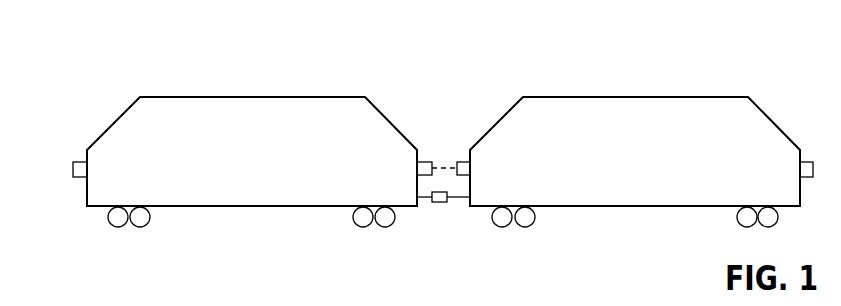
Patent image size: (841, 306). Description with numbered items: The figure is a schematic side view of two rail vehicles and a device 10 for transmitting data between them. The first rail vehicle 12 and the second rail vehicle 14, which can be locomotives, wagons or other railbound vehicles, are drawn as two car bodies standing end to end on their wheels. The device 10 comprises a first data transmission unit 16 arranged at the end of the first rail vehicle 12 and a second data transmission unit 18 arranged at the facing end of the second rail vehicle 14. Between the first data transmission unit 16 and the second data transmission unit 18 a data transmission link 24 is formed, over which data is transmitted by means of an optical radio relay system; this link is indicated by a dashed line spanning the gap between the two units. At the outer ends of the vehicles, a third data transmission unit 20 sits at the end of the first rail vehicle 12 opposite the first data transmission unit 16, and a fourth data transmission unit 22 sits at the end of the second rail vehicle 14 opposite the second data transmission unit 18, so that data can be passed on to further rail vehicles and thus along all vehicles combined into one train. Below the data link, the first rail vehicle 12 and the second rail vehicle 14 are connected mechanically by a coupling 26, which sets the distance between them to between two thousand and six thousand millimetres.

The device for transmitting data 10 is at (420, 87).
The first rail vehicle 12 is at (257, 167).
The second rail vehicle 14 is at (657, 167).
The first data transmission unit 16 is at (423, 161).
The second data transmission unit 18 is at (463, 161).
The third data transmission unit 20 is at (80, 161).
The fourth data transmission unit 22 is at (807, 161).
The data transmission link 24 is at (443, 165).
The coupling 26 is at (424, 203).